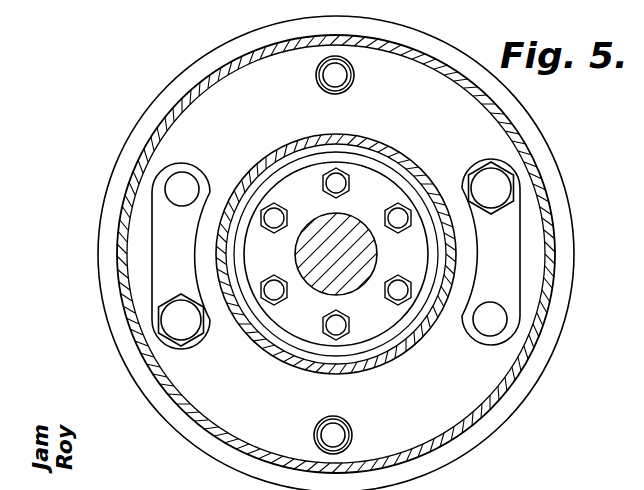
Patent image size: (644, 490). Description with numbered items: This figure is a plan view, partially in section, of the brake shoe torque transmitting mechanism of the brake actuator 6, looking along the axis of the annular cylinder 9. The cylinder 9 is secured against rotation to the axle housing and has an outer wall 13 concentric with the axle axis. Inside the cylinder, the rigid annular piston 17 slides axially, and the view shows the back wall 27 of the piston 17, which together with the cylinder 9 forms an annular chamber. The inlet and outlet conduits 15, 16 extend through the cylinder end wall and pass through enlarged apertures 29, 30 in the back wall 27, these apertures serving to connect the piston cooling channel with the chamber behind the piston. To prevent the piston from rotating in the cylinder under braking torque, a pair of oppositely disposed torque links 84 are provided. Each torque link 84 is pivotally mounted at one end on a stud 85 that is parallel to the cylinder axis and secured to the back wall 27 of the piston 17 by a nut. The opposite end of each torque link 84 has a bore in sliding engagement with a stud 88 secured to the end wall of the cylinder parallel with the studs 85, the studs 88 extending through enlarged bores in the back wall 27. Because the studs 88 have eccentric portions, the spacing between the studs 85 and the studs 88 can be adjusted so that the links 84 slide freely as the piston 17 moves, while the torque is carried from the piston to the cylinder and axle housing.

The brake actuator 6 is at (103, 243).
The annular cylinder 9 is at (574, 217).
The outer wall 13 is at (463, 436).
The inlet conduit 15 is at (348, 432).
The outlet conduit 16 is at (345, 88).
The annular piston 17 is at (549, 308).
The back wall 27 is at (278, 117).
The enlarged aperture 29 is at (316, 441).
The enlarged aperture 30 is at (356, 75).
The torque link 84 is at (231, 180).
The stud 85 is at (183, 331).
The stud 88 is at (187, 187).